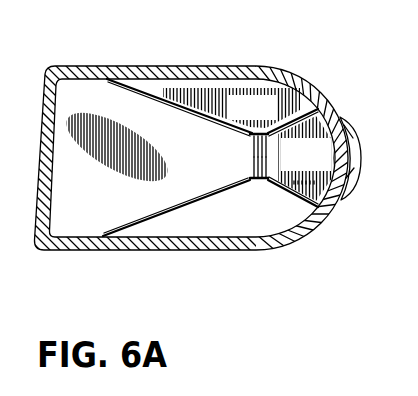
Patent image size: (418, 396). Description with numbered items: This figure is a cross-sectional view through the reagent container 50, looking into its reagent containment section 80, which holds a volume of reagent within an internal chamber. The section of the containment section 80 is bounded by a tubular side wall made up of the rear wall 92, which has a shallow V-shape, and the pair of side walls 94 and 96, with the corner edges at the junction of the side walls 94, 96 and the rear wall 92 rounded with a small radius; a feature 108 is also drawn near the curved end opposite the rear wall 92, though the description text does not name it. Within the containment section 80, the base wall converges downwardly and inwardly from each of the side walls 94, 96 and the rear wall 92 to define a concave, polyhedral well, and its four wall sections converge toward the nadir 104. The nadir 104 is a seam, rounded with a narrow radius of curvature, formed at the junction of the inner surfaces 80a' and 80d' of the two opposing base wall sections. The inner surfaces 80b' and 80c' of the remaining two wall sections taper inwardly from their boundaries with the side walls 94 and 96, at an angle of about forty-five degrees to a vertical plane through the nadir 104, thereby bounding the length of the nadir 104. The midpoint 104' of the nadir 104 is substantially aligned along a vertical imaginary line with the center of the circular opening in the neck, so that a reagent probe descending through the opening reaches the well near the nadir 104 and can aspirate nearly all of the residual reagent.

The reagent container 50 is at (299, 256).
The reagent containment section 80 is at (264, 68).
The inner surface of wall section 80a 80a' is at (158, 157).
The inner surface of wall section 80b 80b' is at (240, 111).
The inner surface of wall section 80c 80c' is at (272, 201).
The inner surface of wall section 80d 80d' is at (306, 157).
The rear wall 92 is at (36, 212).
The side wall 94 is at (183, 66).
The side wall 96 is at (203, 251).
The nadir 104 is at (222, 169).
The midpoint of the nadir 104' is at (227, 146).
The lip 108 is at (358, 141).